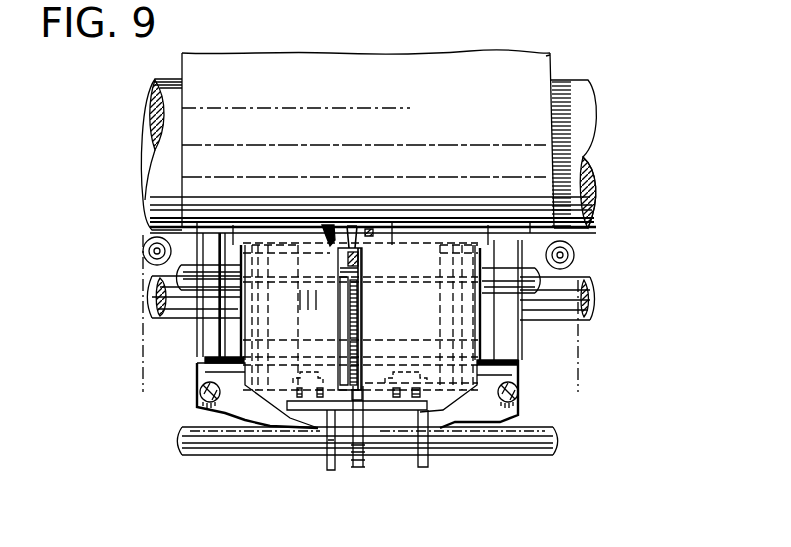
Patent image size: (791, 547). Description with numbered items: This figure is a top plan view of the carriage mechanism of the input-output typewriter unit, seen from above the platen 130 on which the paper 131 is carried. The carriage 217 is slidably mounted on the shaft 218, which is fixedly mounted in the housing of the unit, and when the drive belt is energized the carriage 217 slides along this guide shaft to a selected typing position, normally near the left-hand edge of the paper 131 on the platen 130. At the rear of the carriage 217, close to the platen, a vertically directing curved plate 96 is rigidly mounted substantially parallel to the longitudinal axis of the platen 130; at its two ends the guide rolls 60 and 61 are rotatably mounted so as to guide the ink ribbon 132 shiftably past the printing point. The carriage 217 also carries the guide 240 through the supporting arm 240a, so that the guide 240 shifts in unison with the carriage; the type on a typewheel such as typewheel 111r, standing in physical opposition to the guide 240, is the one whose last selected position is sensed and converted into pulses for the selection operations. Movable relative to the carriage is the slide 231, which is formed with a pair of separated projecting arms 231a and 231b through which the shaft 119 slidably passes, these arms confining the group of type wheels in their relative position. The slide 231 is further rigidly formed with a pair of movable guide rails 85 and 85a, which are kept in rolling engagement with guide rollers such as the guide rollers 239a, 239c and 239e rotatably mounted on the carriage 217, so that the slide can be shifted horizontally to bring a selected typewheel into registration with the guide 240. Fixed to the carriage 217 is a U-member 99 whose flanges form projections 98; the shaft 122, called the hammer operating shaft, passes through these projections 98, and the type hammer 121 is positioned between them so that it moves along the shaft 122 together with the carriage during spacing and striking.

The platen 130 is at (581, 108).
The paper 131 is at (548, 70).
The guide roll 60 is at (143, 251).
The guide roll 61 is at (574, 256).
The ink ribbon 132 is at (143, 358).
The shaft 119 is at (188, 310).
The shaft 218 is at (591, 300).
The carriage 217 is at (206, 363).
The movable guide rail 85 is at (206, 385).
The movable guide rail 85a is at (450, 228).
The slide 231 is at (493, 347).
The projecting arm 231a is at (488, 230).
The projecting arm 231b is at (233, 230).
The vertically directing curved plate 96 is at (197, 232).
The guide 240 is at (328, 228).
The supporting arm 240a is at (350, 225).
The typewheel 111r is at (337, 330).
The guide roller 239e is at (392, 230).
The guide roller 239a is at (288, 385).
The guide roller 239c is at (430, 385).
The U-member 99 is at (394, 419).
The projection 98 is at (331, 472).
The type hammer 121 is at (359, 469).
The shaft 122 is at (202, 450).